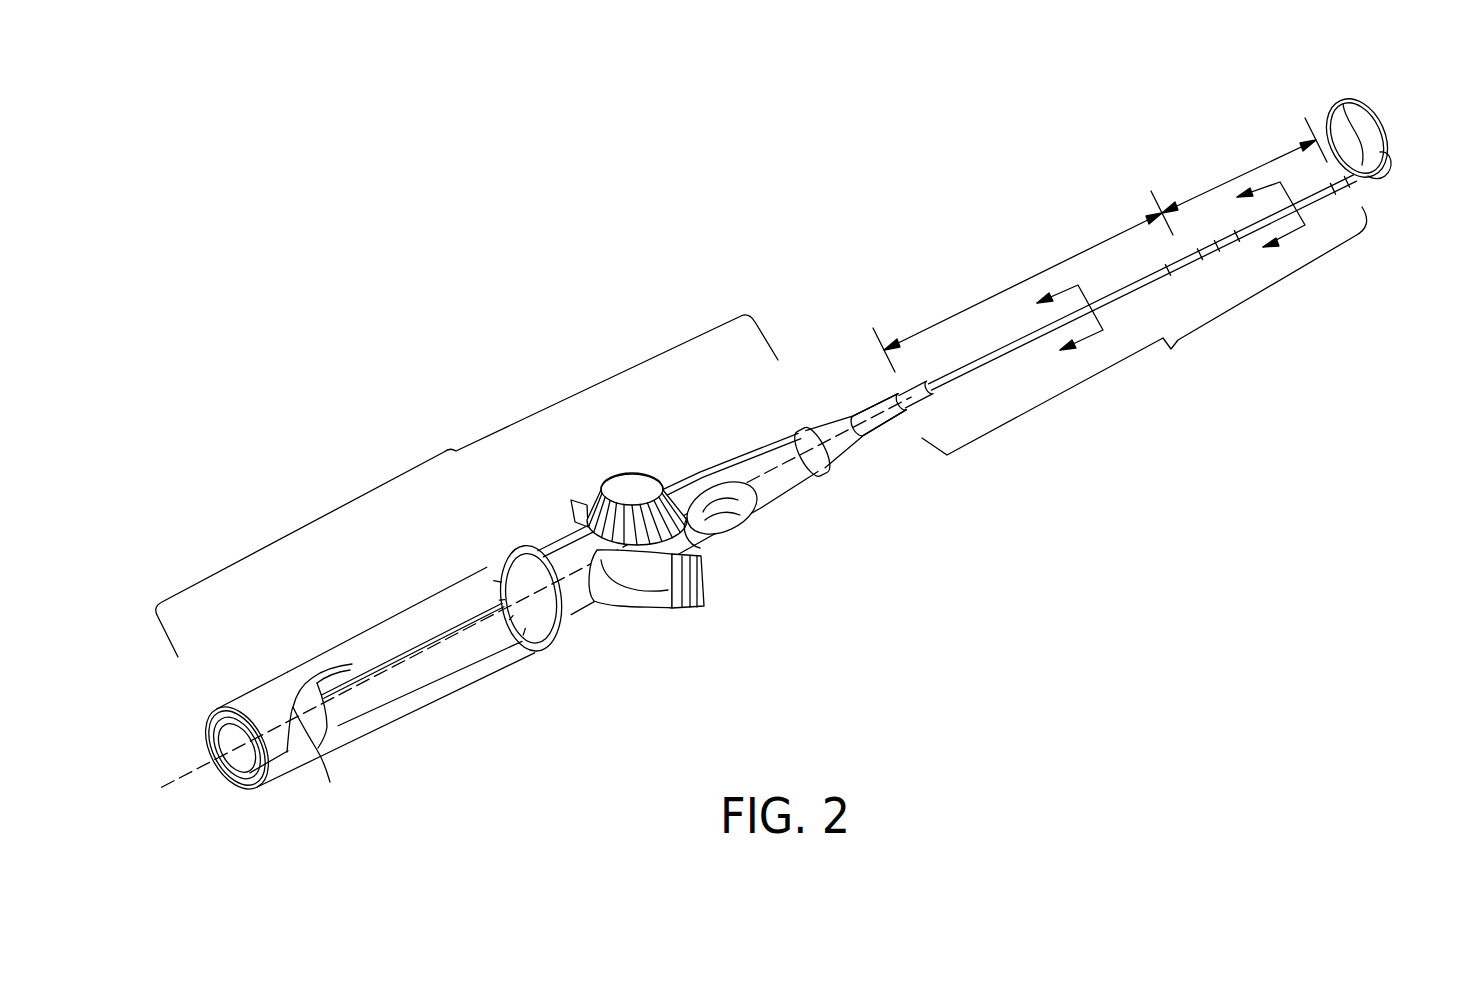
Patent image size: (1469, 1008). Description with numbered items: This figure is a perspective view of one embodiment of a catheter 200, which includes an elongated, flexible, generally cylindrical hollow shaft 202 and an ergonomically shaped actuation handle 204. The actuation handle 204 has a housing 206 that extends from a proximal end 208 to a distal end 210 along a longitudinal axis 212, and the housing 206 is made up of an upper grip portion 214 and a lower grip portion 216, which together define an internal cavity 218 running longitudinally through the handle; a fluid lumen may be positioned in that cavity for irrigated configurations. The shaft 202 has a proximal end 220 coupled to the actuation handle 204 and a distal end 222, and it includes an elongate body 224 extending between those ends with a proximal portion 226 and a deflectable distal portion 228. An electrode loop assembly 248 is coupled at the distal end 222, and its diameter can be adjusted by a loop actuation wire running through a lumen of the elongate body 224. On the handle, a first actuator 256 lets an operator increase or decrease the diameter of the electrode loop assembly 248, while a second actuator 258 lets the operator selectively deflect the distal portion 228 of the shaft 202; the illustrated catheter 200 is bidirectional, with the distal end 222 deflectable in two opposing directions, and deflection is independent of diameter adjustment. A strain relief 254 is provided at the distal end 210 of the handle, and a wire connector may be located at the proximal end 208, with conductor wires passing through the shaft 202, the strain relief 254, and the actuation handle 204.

The catheter 200 is at (566, 266).
The shaft 202 is at (1159, 290).
The actuation handle 204 is at (444, 451).
The housing 206 is at (277, 697).
The proximal end 208 is at (223, 803).
The distal end 210 is at (828, 400).
The longitudinal axis 212 is at (158, 787).
The upper grip portion 214 is at (372, 647).
The lower grip portion 216 is at (393, 712).
The internal cavity 218 is at (200, 785).
The proximal end 220 is at (908, 407).
The distal end 222 is at (1343, 100).
The elongate body 224 is at (943, 383).
The proximal portion 226 is at (1010, 283).
The deflectable distal portion 228 is at (1237, 168).
The electrode loop assembly 248 is at (1388, 95).
The strain relief 254 is at (843, 447).
The first actuator 256 is at (558, 675).
The second actuator 258 is at (634, 448).